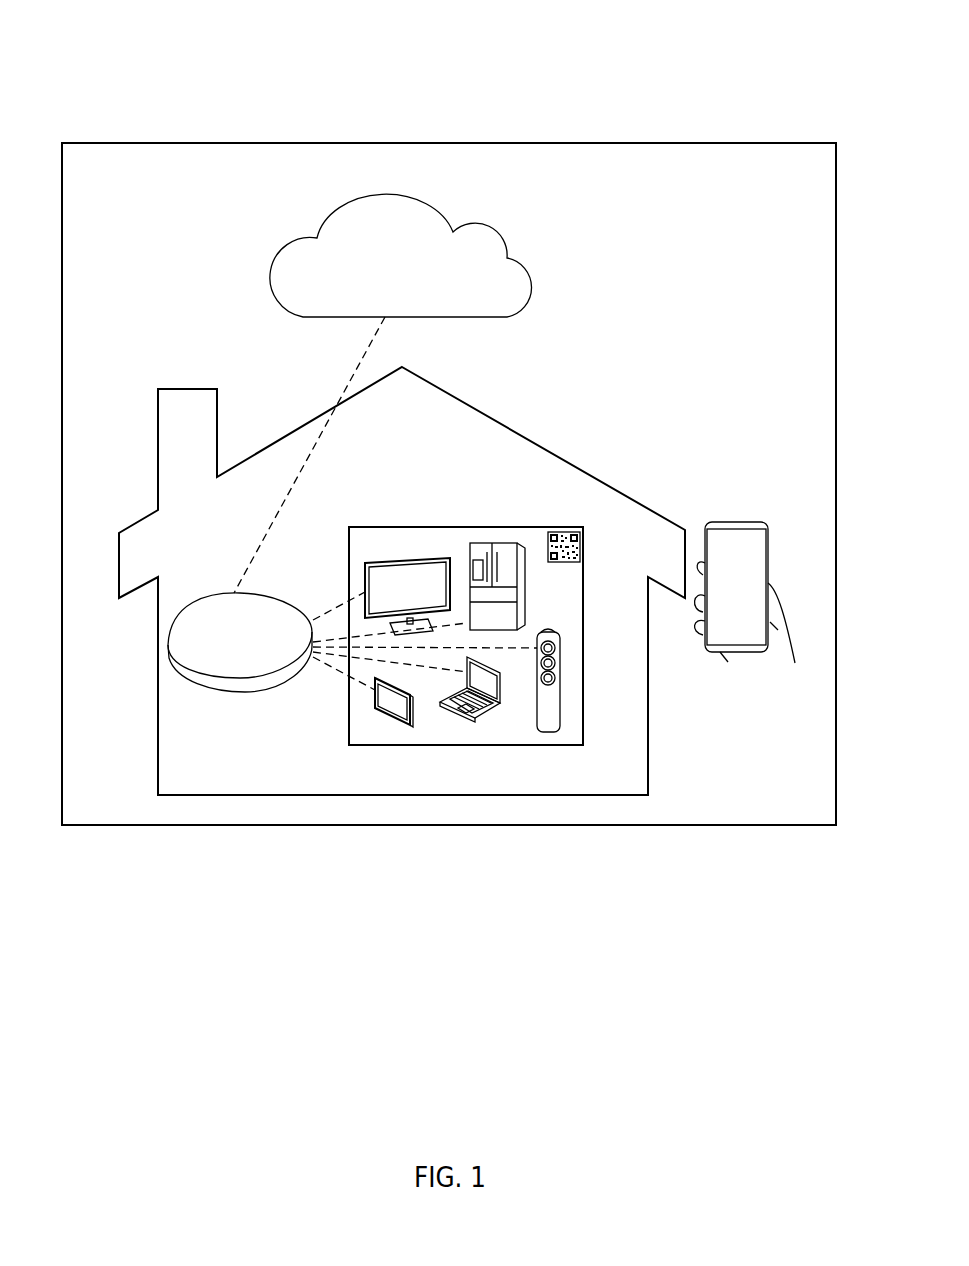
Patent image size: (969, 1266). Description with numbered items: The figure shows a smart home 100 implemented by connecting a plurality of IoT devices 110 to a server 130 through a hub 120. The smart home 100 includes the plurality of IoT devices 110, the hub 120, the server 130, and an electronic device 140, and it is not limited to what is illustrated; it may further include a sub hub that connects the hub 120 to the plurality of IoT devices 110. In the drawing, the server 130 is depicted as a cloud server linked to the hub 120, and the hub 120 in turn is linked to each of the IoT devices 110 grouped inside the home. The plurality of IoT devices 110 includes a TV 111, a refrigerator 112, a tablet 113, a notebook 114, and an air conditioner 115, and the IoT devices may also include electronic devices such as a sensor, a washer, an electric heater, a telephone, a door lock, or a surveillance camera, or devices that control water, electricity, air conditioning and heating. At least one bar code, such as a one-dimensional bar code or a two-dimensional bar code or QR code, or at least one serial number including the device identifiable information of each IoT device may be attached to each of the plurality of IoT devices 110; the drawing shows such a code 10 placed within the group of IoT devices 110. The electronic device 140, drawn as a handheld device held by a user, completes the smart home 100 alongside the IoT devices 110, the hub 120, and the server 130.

The smart home 100 is at (694, 92).
The server 130 is at (535, 286).
The hub 120 is at (250, 692).
The plurality of IoT devices 110 is at (465, 527).
The TV 111 is at (405, 560).
The refrigerator 112 is at (512, 541).
The tablet 113 is at (400, 726).
The notebook 114 is at (465, 721).
The air conditioner 115 is at (561, 702).
The QR code 10 is at (582, 548).
The electronic device 140 is at (735, 520).